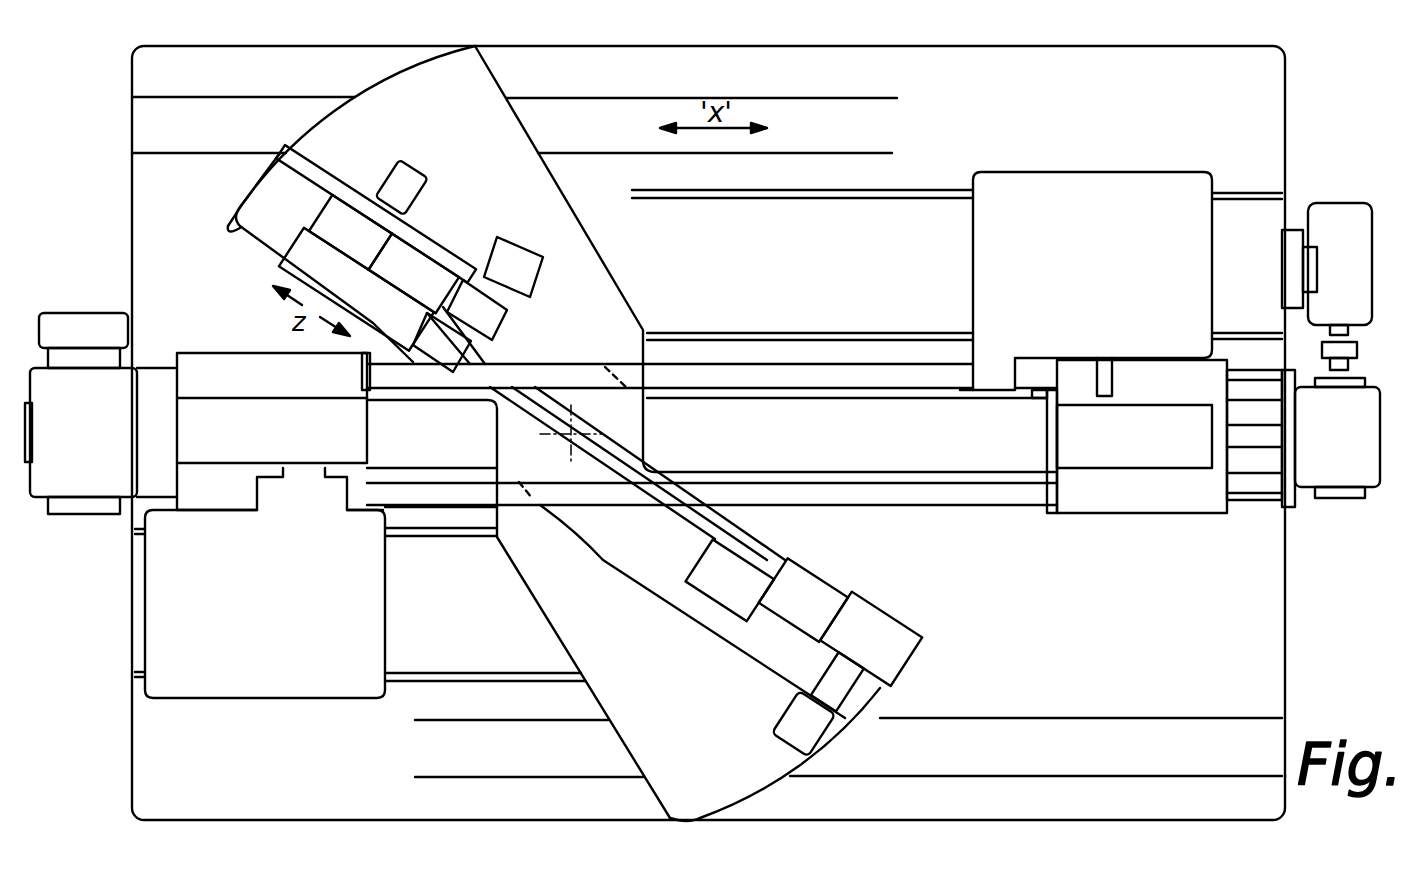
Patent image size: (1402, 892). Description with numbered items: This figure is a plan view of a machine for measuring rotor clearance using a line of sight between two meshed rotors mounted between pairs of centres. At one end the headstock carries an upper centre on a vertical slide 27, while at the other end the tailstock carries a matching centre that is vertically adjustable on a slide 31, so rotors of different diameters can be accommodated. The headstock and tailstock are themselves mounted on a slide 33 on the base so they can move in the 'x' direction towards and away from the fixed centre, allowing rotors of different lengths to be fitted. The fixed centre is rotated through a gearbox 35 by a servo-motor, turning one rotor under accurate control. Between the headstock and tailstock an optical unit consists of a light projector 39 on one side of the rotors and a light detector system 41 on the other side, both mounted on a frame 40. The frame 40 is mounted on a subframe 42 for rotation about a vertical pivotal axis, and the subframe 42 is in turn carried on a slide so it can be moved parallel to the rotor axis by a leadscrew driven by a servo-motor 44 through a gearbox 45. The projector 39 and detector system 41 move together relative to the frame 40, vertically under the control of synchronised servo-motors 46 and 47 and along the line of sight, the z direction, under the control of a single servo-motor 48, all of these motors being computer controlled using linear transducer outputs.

The vertical slide 27 is at (258, 492).
The slide 31 is at (1105, 372).
The slide 33 is at (912, 235).
The gearbox 35 is at (37, 362).
The light projector 39 is at (474, 202).
The frame 40 is at (567, 332).
The light detector system 41 is at (860, 585).
The subframe 42 is at (553, 620).
The servo-motor 44 is at (1365, 278).
The gearbox 45 is at (1352, 460).
The servo-motor 46 is at (410, 172).
The servo-motor 47 is at (812, 727).
The servo-motor 48 is at (516, 247).